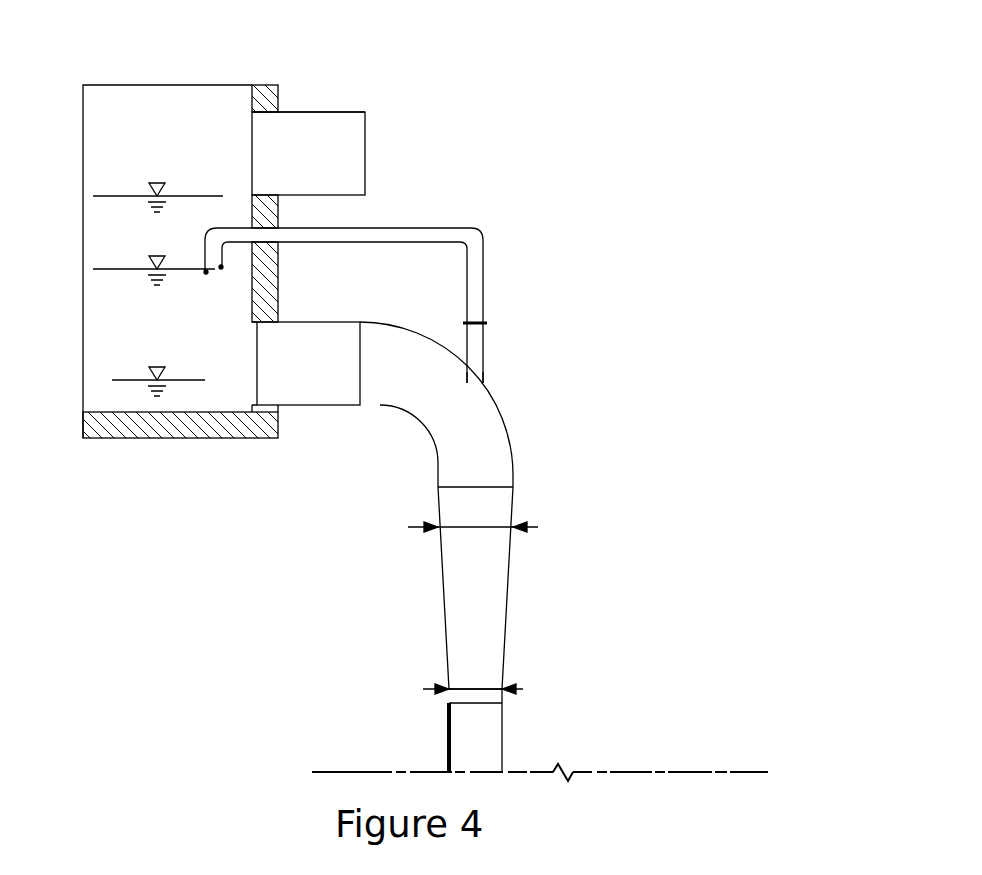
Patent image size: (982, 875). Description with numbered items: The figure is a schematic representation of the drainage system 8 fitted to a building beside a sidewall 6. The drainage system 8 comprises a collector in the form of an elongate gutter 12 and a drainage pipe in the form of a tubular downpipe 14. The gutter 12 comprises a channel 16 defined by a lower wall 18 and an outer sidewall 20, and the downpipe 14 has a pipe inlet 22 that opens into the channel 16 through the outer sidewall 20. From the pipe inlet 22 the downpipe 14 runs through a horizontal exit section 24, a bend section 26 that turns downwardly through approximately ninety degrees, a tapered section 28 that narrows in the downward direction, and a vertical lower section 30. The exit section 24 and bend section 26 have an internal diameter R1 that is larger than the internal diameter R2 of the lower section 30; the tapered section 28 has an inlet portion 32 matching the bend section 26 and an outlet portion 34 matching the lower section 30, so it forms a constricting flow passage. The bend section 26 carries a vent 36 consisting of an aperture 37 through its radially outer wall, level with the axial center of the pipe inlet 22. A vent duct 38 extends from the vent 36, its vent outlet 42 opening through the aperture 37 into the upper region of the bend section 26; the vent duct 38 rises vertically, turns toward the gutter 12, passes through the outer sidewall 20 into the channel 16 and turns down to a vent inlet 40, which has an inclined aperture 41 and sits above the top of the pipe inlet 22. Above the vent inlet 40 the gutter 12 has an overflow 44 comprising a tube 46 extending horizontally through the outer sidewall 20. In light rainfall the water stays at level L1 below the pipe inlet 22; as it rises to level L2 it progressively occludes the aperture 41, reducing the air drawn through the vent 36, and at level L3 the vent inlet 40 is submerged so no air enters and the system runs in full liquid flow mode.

The sidewall 6 is at (232, 280).
The drainage system 8 is at (342, 435).
The gutter 12 is at (170, 280).
The downpipe 14 is at (449, 528).
The channel 16 is at (212, 151).
The lower wall 18 is at (112, 425).
The outer sidewall 20 is at (265, 85).
The pipe inlet 22 is at (247, 378).
The exit section 24 is at (295, 383).
The bend section 26 is at (408, 405).
The tapered section 28 is at (490, 592).
The lower section 30 is at (490, 730).
The inlet portion 32 is at (492, 527).
The outlet portion 34 is at (490, 688).
The vent 36 is at (495, 383).
The aperture 37 is at (485, 388).
The vent duct 38 is at (307, 275).
The vent inlet 40 is at (210, 275).
The aperture 41 is at (205, 266).
The vent outlet 42 is at (487, 378).
The overflow 44 is at (342, 110).
The tube 46 is at (305, 112).
The level L1 is at (118, 379).
The level L2 is at (123, 270).
The level L3 is at (127, 197).
The internal diameter R1 is at (458, 530).
The internal diameter R2 is at (456, 690).